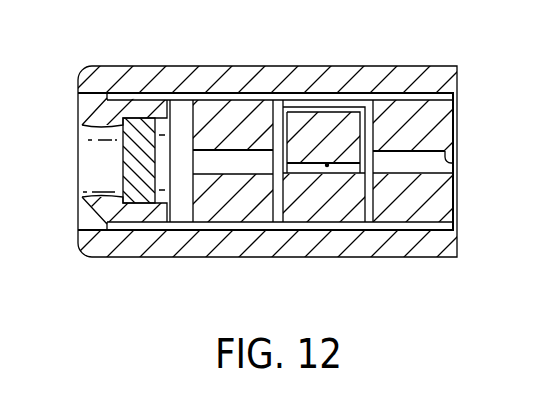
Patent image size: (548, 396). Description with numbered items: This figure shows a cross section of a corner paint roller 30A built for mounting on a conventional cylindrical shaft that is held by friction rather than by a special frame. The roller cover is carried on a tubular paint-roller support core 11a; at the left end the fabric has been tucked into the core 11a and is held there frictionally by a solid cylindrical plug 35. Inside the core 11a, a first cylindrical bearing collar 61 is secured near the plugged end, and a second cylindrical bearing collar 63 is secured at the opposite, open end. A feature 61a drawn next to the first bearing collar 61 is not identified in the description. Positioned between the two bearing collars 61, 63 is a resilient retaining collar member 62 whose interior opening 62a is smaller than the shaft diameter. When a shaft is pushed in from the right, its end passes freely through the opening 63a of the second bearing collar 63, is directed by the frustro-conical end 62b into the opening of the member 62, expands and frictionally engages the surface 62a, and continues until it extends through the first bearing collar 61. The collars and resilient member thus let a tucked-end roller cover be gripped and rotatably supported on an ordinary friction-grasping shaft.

The paint roller 30A is at (212, 67).
The paint-roller support core 11a is at (300, 95).
The solid cylindrical plug 35 is at (122, 165).
The first cylindrical bearing collar 61 is at (217, 210).
The retainer groove 61a is at (232, 165).
The resilient retaining collar member 62 is at (322, 208).
The interior opening 62a is at (372, 97).
The frustro-conical end 62b is at (372, 174).
The second cylindrical bearing collar 63 is at (415, 212).
The opening 63a is at (455, 160).